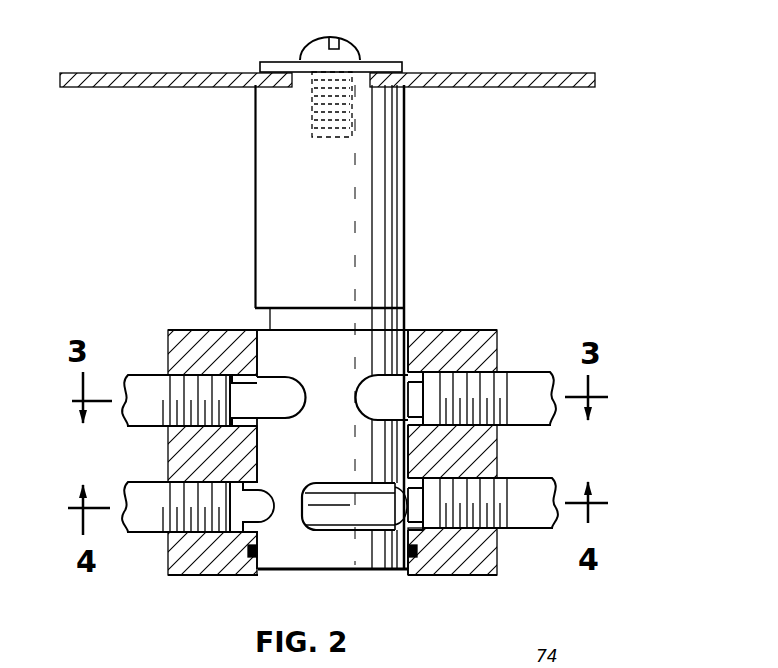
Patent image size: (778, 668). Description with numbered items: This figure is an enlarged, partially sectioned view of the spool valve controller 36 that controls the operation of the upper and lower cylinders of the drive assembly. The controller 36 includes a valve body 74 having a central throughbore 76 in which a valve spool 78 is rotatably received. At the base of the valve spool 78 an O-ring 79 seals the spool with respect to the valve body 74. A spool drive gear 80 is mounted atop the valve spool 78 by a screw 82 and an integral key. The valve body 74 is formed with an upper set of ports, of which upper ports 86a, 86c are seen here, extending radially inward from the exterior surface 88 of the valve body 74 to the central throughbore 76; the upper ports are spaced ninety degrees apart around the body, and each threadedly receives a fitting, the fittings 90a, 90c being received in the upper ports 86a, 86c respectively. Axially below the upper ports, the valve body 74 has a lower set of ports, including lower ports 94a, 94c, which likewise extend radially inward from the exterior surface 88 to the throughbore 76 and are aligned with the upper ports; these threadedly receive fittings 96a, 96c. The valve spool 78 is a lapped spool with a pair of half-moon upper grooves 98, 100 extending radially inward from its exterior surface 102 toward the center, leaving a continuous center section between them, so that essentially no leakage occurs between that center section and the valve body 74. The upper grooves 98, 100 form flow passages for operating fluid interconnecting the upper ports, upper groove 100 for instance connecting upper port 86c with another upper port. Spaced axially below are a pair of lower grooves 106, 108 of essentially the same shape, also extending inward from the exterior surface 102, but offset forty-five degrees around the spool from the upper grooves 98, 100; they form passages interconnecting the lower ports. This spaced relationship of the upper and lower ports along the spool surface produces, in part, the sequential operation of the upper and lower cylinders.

The spool valve controller 36 is at (368, 361).
The valve body 74 is at (343, 453).
The central throughbore 76 is at (408, 574).
The valve spool 78 is at (240, 320).
The O-ring 79 is at (413, 568).
The spool drive gear 80 is at (470, 73).
The screw 82 is at (338, 44).
The upper port 86a is at (233, 373).
The upper port 86c is at (441, 330).
The exterior surface 88 is at (498, 342).
The fitting 90a is at (146, 392).
The fitting 90c is at (533, 388).
The lower port 94a is at (256, 525).
The lower port 94c is at (430, 540).
The fitting 96a is at (146, 528).
The fitting 96c is at (543, 486).
The upper groove 98 is at (278, 390).
The upper groove 100 is at (366, 397).
The exterior surface 102 is at (336, 463).
The lower groove 106 is at (266, 515).
The lower groove 108 is at (346, 522).